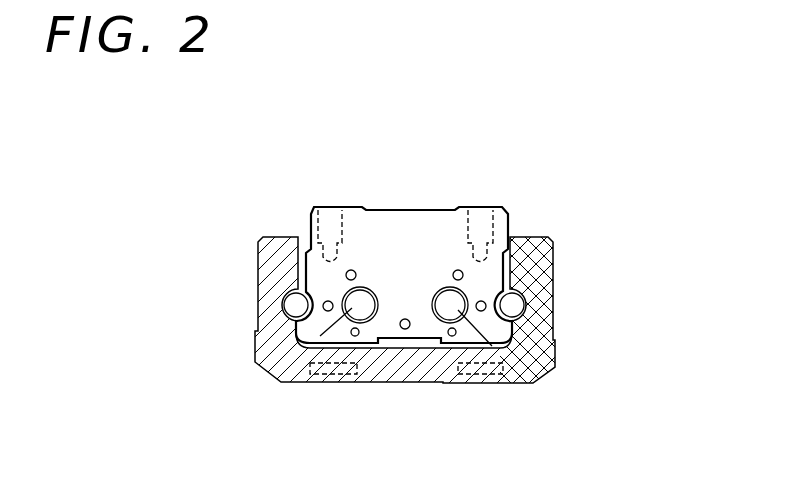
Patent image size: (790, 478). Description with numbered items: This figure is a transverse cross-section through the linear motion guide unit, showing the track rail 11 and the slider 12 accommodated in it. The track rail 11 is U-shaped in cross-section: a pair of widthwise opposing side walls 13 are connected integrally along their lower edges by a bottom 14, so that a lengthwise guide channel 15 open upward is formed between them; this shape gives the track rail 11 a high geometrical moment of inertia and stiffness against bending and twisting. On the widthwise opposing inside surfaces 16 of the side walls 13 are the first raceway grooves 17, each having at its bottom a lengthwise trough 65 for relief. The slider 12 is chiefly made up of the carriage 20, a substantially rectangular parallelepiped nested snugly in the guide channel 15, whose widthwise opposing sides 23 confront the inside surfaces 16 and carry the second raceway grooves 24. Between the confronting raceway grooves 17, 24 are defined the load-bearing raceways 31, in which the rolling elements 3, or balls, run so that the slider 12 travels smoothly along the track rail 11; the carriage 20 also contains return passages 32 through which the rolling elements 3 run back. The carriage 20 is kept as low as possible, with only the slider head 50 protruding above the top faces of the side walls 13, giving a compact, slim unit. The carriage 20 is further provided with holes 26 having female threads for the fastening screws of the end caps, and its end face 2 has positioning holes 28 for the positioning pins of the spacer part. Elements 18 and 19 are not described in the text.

The end face 2 is at (395, 230).
The rolling elements 3 is at (288, 300).
The track rail 11 is at (261, 378).
The slider 12 is at (442, 206).
The side walls 13 is at (262, 297).
The bottom 14 is at (383, 372).
The guide channel 15 is at (431, 343).
The inside surfaces 16 is at (260, 247).
The raceway grooves 17 is at (283, 330).
The threaded hole 18 is at (333, 209).
The bottom recess 19 is at (333, 352).
The carriage 20 is at (312, 207).
The widthwise opposing sides 23 is at (304, 248).
The raceway grooves 24 is at (284, 309).
The hole 26 is at (354, 271).
The positioning holes 28 is at (255, 362).
The load-bearing raceways 31 is at (297, 285).
The return passages 32 is at (316, 350).
The slider head 50 is at (413, 222).
The lengthwise trough 65 is at (528, 303).